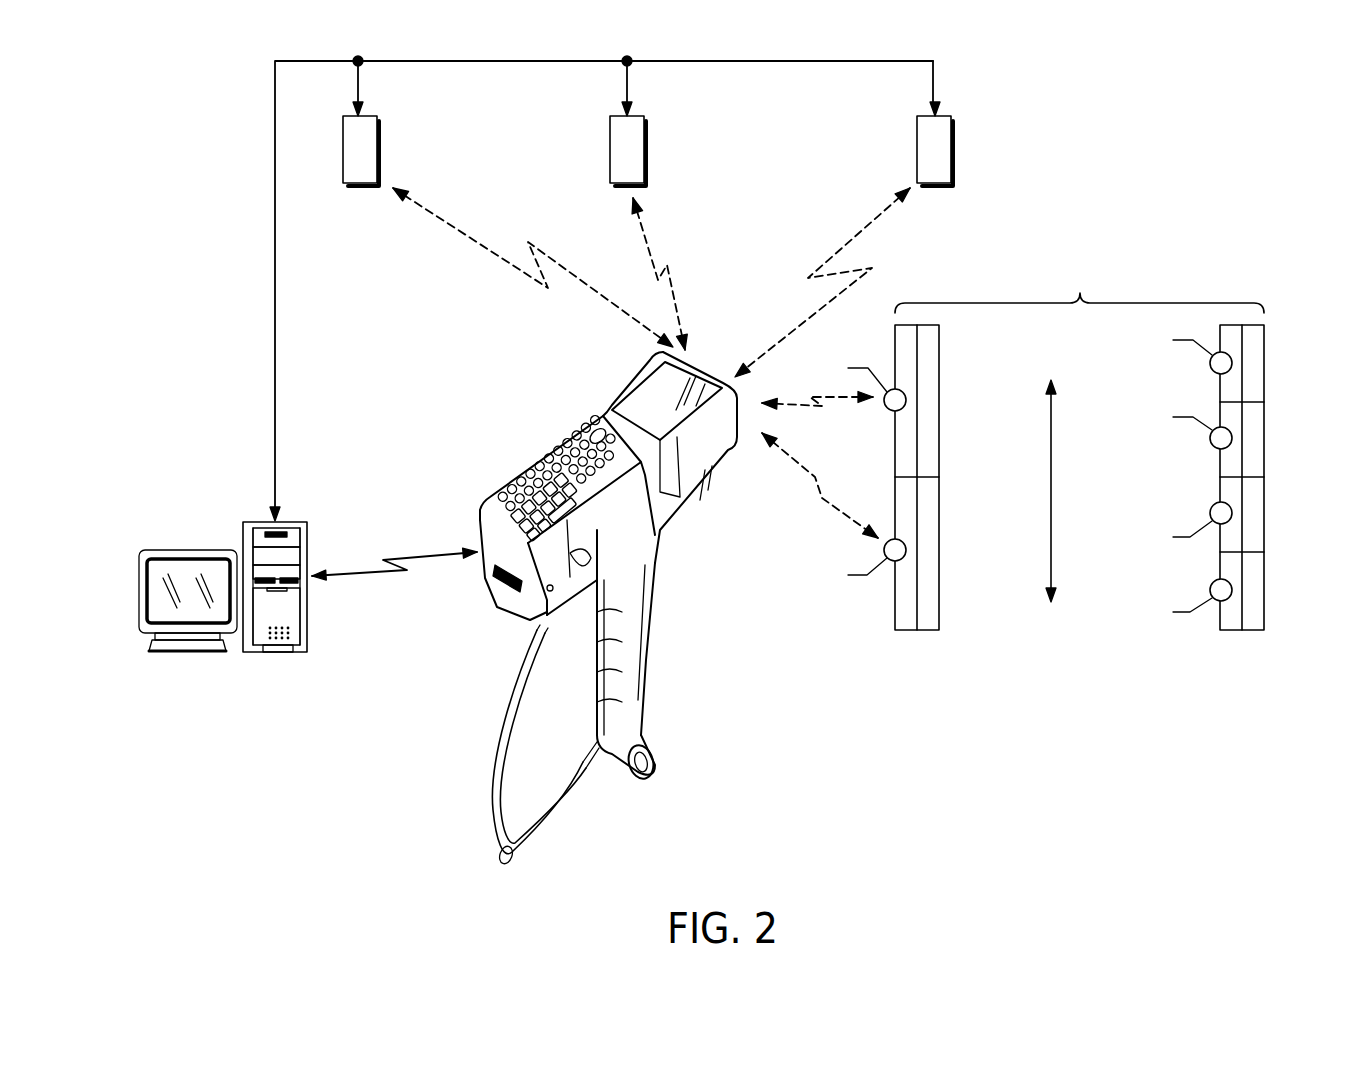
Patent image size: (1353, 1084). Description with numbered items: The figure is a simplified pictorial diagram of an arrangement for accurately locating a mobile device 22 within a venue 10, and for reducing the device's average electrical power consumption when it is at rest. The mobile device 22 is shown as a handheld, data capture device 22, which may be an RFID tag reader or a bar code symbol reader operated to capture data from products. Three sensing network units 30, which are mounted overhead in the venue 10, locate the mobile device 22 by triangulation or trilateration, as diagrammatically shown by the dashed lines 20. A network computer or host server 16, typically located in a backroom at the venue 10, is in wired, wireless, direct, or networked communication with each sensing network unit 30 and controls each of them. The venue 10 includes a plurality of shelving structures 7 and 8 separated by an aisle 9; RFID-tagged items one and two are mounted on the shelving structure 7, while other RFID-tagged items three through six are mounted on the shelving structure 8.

The shelving structure 7 is at (928, 325).
The shelving structure 8 is at (1233, 325).
The aisle 9 is at (1106, 502).
The venue 10 is at (1152, 287).
The host server 16 is at (351, 689).
The dashed lines 20 is at (651, 363).
The mobile data capture device 22 is at (688, 524).
The sensing network unit 30 is at (685, 144).